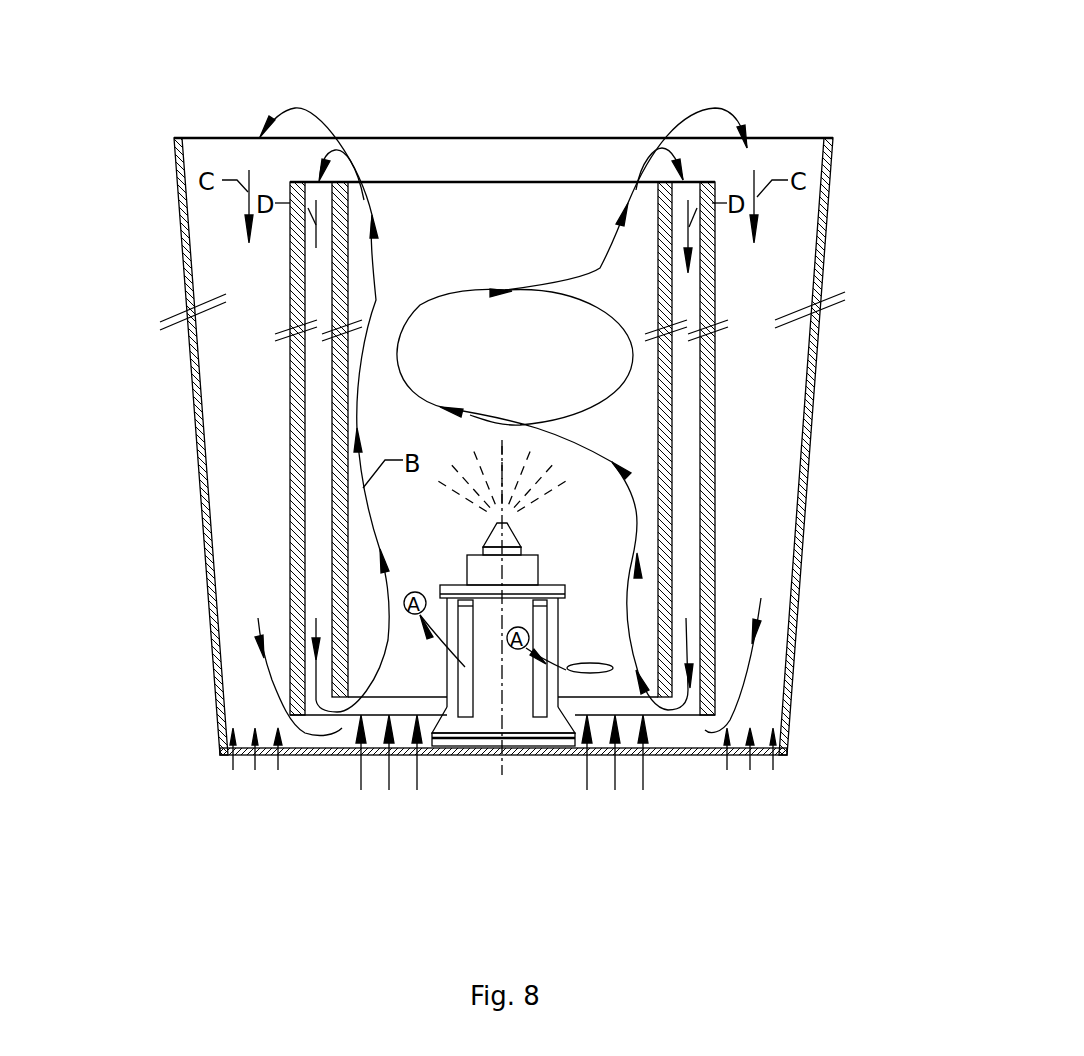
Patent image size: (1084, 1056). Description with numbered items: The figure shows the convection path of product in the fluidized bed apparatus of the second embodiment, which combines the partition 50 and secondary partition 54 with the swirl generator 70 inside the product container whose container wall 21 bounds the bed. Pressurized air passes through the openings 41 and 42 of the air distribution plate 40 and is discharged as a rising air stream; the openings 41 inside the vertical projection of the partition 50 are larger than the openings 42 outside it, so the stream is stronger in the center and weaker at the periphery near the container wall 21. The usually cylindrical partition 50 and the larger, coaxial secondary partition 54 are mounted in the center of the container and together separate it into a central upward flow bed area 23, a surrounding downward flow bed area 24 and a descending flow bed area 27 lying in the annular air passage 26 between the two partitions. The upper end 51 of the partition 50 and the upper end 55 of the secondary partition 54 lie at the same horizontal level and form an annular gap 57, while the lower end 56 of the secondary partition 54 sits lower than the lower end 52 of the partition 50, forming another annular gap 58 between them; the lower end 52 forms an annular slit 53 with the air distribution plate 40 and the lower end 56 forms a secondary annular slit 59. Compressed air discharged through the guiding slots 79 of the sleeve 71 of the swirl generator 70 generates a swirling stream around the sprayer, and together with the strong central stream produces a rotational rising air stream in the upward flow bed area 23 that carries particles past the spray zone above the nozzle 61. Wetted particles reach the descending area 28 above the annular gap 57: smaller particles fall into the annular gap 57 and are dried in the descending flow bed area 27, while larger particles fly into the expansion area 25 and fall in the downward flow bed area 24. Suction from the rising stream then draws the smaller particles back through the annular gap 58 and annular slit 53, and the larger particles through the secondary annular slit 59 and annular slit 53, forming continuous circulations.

The outer wall 21 is at (145, 446).
The central upward flow bed area 23 is at (232, 410).
The surrounding downward flow bed area 24 is at (851, 446).
The expansion area 25 is at (725, 167).
The annular air passage 26 is at (795, 439).
The descending flow bed area 27 is at (778, 454).
The descending area 28 is at (790, 135).
The air distribution plate 40 is at (419, 812).
The air passage openings 41 is at (355, 832).
The air passage openings 42 is at (424, 794).
The partition 50 is at (212, 439).
The upper end 51 is at (388, 130).
The lower end 52 is at (189, 448).
The annular slit 53 is at (254, 661).
The secondary partition 54 is at (814, 327).
The upper end 55 is at (816, 433).
The lower end 56 is at (825, 664).
The annular gap 57 is at (595, 178).
The annular gap 58 is at (751, 675).
The secondary annular slit 59 is at (600, 676).
The nozzle 61 is at (689, 499).
The swirl generator 70 is at (692, 554).
The sleeve 71 is at (688, 653).
The guiding slots 79 is at (542, 675).